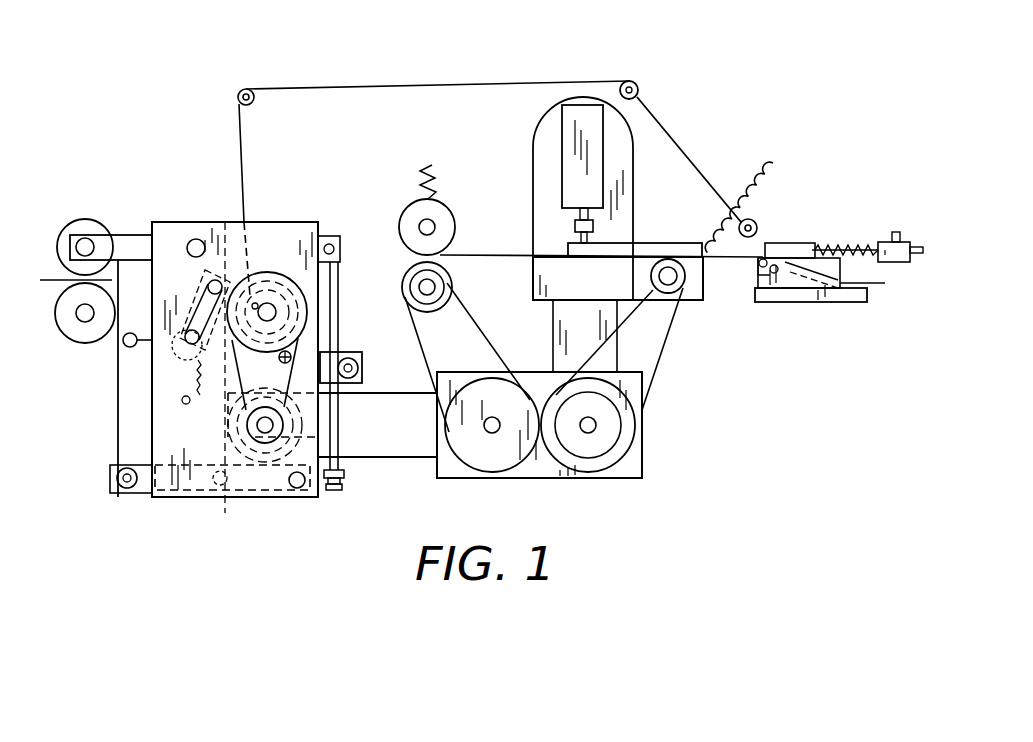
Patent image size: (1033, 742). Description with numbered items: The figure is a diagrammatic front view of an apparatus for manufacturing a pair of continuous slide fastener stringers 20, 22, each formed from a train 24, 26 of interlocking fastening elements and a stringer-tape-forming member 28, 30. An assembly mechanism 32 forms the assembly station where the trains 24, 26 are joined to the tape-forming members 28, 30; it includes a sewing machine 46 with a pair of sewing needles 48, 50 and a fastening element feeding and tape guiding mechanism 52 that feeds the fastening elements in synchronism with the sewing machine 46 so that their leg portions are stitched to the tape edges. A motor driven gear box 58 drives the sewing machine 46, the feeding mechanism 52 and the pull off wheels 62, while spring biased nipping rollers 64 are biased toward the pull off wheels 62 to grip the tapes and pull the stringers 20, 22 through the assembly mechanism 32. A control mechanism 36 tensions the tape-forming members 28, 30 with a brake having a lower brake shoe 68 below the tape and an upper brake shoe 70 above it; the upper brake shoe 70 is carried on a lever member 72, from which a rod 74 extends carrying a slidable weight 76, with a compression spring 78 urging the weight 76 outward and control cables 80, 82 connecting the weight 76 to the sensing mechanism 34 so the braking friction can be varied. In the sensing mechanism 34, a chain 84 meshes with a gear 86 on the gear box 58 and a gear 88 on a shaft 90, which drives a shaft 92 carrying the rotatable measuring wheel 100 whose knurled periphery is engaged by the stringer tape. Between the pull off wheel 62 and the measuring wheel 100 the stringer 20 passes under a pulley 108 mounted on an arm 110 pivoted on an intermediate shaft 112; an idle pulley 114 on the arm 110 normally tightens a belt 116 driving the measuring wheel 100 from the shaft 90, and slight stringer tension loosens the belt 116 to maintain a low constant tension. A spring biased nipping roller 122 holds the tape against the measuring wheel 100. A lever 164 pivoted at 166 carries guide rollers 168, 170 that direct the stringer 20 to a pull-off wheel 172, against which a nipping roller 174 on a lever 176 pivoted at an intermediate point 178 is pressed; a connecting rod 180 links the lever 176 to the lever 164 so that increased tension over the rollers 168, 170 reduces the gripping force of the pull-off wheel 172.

The continuous stringer 20 is at (605, 235).
The continuous stringer 22 is at (470, 256).
The train of interlocking fastening elements 24 is at (782, 207).
The train of interlocking fastening elements 26 is at (770, 178).
The stringer-tape-forming member 28 is at (879, 311).
The stringer-tape-forming member 30 is at (883, 284).
The assembly mechanism 32 is at (663, 97).
The sensing mechanism 34 is at (289, 222).
The control mechanism 36 is at (830, 234).
The sewing machine 46 is at (533, 143).
The sewing needle 48 is at (635, 227).
The sewing needle 50 is at (588, 237).
The fastening element feeding and tape guiding mechanism 52 is at (705, 290).
The motor driven gear box 58 is at (562, 470).
The pull off wheel 62 is at (449, 280).
The spring biased nipping roller 64 is at (443, 224).
The lower brake shoe 68 is at (798, 283).
The upper brake shoe 70 is at (840, 264).
The lever member 72 is at (800, 246).
The rod 74 is at (870, 243).
The weight 76 is at (901, 243).
The compression spring 78 is at (828, 243).
The control cable 80 is at (697, 159).
The control cable 82 is at (681, 142).
The chain 84 is at (382, 458).
The gear 86 is at (613, 442).
The gear 88 is at (320, 438).
The shaft 90 is at (258, 428).
The shaft 92 is at (276, 312).
The measuring wheel 100 is at (267, 290).
The pulley 108 is at (358, 369).
The arm 110 is at (362, 356).
The intermediate shaft 112 is at (291, 354).
The idle pulley 114 is at (333, 396).
The belt 116 is at (239, 387).
The spring biased nipping roller 122 is at (222, 232).
The lever 164 is at (118, 497).
The pivot 166 is at (300, 487).
The guide roller 168 is at (116, 481).
The guide roller 170 is at (206, 503).
The pull-off wheel 172 is at (81, 332).
The nipping roller 174 is at (76, 232).
The lever 176 is at (130, 236).
The intermediate pivot point 178 is at (190, 241).
The connecting rod 180 is at (340, 286).